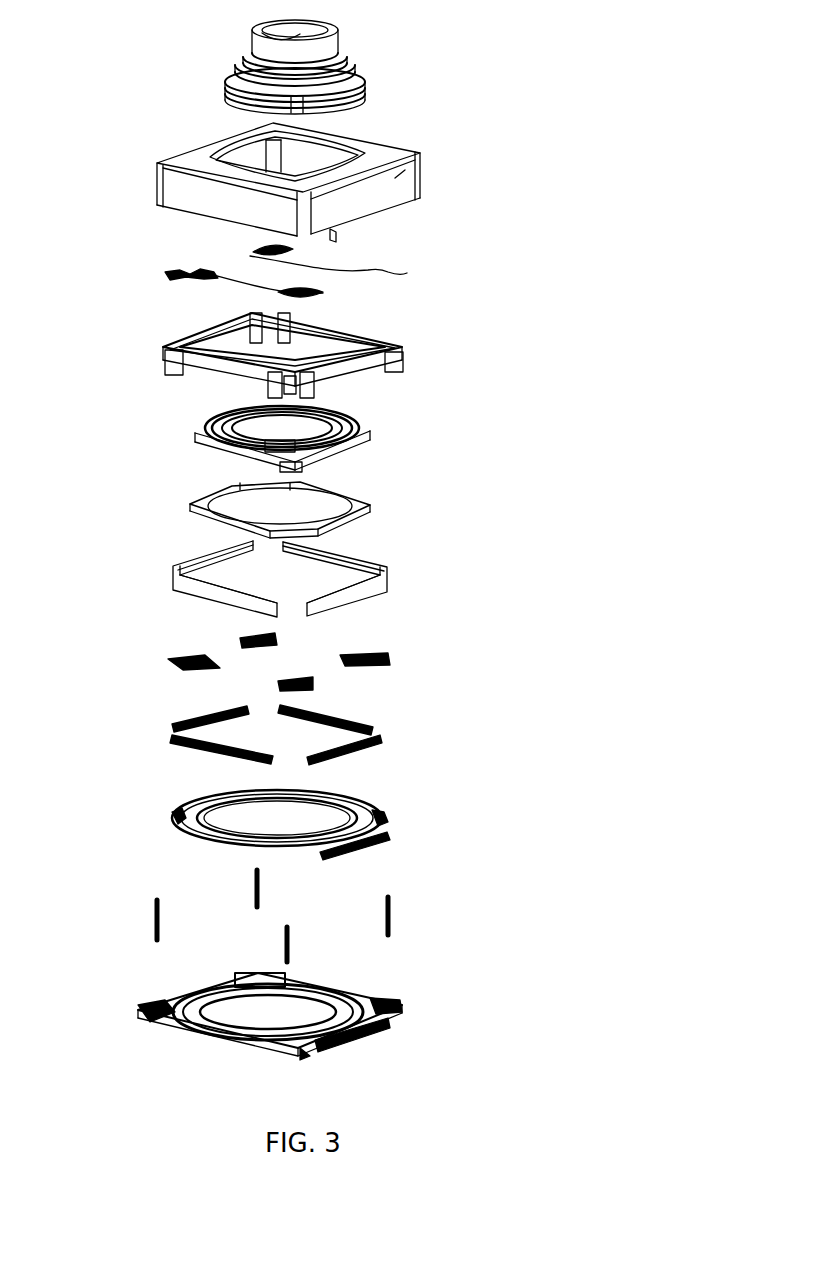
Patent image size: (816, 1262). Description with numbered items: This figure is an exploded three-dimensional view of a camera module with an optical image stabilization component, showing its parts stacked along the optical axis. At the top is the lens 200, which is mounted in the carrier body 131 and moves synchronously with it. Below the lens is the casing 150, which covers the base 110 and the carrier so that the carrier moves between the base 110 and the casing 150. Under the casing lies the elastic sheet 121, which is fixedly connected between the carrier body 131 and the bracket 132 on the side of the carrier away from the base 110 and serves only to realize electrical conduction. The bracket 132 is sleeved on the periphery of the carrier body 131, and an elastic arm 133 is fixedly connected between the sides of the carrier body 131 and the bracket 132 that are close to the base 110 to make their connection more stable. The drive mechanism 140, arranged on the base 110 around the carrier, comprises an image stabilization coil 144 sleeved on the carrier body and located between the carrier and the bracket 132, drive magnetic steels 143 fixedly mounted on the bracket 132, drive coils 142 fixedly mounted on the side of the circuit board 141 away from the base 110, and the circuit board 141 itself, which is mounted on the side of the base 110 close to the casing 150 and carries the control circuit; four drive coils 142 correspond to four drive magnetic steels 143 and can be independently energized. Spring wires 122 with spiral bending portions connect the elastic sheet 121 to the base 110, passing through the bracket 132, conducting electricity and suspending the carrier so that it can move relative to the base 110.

The lens 200 is at (367, 70).
The casing 150 is at (422, 163).
The elastic sheet 121 is at (408, 273).
The bracket 132 is at (405, 355).
The carrier body 131 is at (362, 428).
The drive mechanism 140 is at (520, 824).
The image stabilization coil 144 is at (372, 508).
The drive magnetic steel 143 is at (389, 580).
The elastic arm 133 is at (170, 662).
The drive coil 142 is at (384, 738).
The circuit board 141 is at (384, 822).
The spring wire 122 is at (393, 910).
The base 110 is at (404, 1000).